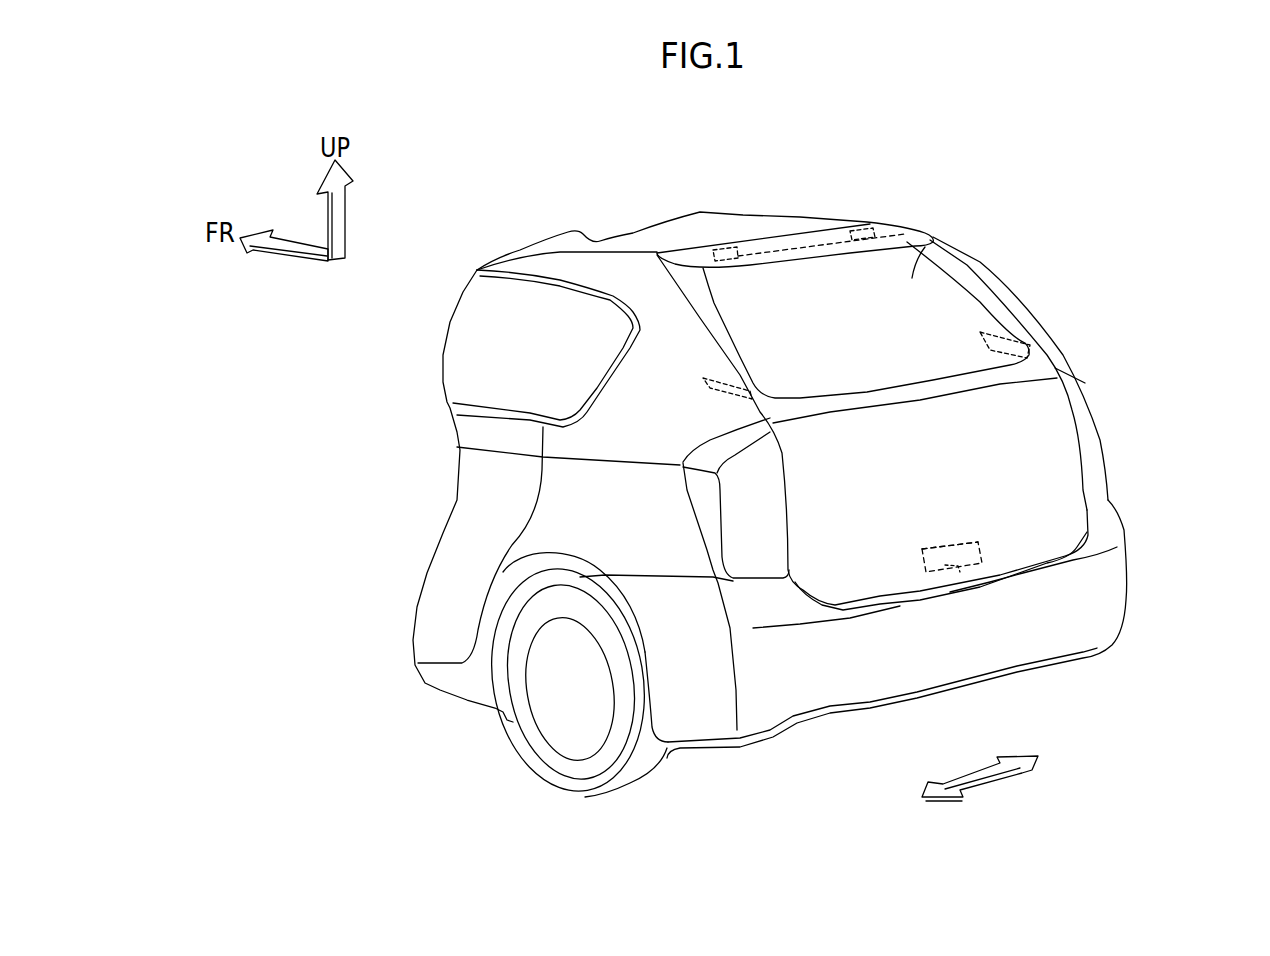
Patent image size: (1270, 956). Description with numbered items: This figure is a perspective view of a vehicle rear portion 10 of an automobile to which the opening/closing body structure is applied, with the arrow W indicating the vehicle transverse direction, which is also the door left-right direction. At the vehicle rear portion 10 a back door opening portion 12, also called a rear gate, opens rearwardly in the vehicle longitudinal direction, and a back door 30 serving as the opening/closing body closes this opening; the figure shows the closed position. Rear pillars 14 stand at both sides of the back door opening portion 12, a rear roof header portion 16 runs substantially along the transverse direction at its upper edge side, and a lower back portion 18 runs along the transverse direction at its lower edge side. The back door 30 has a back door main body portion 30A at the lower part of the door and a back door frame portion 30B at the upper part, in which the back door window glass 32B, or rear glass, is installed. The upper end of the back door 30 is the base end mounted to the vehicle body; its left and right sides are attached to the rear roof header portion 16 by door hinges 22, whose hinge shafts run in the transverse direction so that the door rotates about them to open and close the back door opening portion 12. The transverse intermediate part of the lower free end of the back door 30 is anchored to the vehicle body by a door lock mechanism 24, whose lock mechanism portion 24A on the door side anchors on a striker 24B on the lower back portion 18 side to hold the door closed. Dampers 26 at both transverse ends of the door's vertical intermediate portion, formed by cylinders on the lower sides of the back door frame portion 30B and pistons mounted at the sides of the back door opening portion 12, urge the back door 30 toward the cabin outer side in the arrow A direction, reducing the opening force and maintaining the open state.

The vehicle rear portion 10 is at (1100, 200).
The back door opening portion 12 is at (727, 333).
The rear pillar 14 is at (660, 304).
The rear roof header portion 16 is at (767, 222).
The lower back portion 18 is at (886, 593).
The door hinge 22 is at (723, 247).
The door lock mechanism 24 is at (1028, 572).
The lock mechanism portion 24A is at (1003, 562).
The striker 24B is at (960, 574).
The damper 26 is at (757, 378).
The back door 30 is at (1070, 447).
The back door main body portion 30A is at (1060, 488).
The back door frame portion 30B is at (993, 288).
The back door window glass 32B is at (940, 250).
The arrow A direction A is at (730, 400).
The arrow W is at (978, 765).